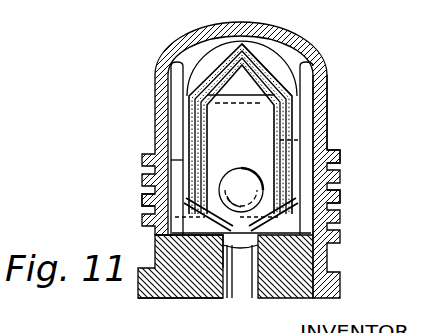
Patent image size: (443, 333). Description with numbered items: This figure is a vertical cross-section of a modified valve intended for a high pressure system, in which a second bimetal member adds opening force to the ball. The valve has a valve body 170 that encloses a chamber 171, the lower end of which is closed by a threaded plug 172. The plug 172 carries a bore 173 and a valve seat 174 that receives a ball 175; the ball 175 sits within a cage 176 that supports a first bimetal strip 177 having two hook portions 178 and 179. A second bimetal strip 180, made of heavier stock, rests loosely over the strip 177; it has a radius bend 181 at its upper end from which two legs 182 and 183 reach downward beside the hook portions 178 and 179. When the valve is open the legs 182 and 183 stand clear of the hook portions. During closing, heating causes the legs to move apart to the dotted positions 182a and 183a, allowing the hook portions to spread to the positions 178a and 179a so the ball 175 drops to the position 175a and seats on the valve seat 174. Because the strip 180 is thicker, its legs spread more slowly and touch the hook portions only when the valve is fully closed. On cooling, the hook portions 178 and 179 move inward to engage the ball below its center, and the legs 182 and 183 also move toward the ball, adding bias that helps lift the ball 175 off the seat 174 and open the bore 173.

The valve body 170 is at (327, 122).
The chamber 171 is at (308, 82).
The threaded plug 172 is at (186, 298).
The bore 173 is at (258, 292).
The valve seat 174 is at (256, 237).
The ball 175 is at (250, 159).
The ball lowered position 175a is at (180, 287).
The cage 176 is at (256, 135).
The bimetal strip 177 is at (291, 62).
The hook portion 178 is at (208, 222).
The hook portion spread position 178a is at (146, 205).
The hook portion 179 is at (241, 218).
The hook portion spread position 179a is at (330, 207).
The second bimetal strip 180 is at (211, 60).
The radius bend 181 is at (268, 50).
The leg 182 is at (172, 124).
The leg spread position 182a is at (170, 164).
The leg 183 is at (327, 137).
The leg spread position 183a is at (329, 164).